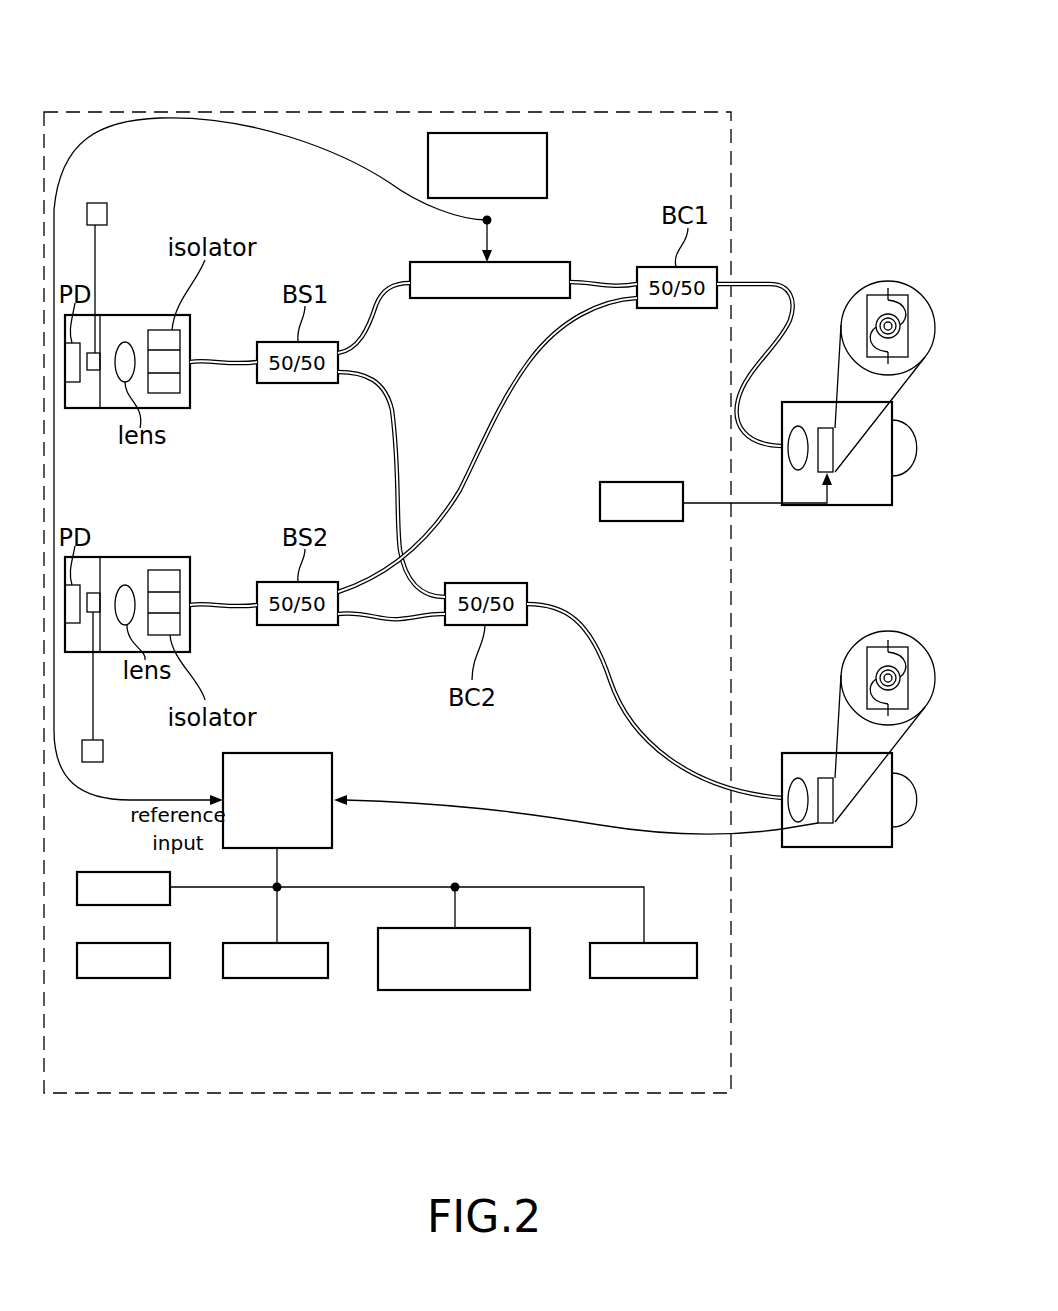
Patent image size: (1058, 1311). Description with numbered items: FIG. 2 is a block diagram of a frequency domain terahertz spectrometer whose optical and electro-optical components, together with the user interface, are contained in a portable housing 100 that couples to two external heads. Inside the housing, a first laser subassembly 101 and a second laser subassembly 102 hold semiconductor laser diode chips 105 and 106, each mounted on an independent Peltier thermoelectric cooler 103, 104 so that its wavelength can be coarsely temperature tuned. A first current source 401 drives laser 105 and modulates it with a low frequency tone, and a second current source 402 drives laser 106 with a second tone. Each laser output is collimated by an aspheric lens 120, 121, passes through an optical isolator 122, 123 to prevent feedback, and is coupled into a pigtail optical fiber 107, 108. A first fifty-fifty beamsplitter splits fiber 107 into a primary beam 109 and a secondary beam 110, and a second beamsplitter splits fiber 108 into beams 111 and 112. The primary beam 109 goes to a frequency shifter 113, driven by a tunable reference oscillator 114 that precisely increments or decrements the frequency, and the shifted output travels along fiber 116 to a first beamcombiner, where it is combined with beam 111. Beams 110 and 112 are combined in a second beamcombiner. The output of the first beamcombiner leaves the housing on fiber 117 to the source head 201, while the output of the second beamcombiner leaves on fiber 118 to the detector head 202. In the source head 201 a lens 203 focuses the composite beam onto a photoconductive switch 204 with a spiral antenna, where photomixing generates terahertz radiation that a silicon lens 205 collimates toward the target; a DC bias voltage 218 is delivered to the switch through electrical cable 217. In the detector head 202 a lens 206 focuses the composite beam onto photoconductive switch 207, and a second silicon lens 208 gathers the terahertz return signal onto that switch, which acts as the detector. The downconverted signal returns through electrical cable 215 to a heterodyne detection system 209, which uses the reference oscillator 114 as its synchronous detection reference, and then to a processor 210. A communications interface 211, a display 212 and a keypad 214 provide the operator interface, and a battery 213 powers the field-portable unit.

The housing 100 is at (383, 112).
The laser subassembly 101 is at (70, 408).
The laser subassembly 102 is at (145, 560).
The Peltier thermoelectric cooler 103 is at (145, 318).
The Peltier thermoelectric cooler 104 is at (192, 643).
The laser 105 is at (95, 408).
The laser 106 is at (93, 593).
The pigtail optical fiber 107 is at (218, 362).
The pigtail optical fiber 108 is at (216, 605).
The primary output beam 109 is at (373, 300).
The secondary beam 110 is at (388, 382).
The output beam 111 is at (478, 437).
The secondary beam 112 is at (390, 620).
The frequency shifter 113 is at (412, 262).
The tunable reference oscillator 114 is at (547, 165).
The fiber 116 is at (598, 280).
The fiber optic cable 117 is at (740, 377).
The fiber optic cable 118 is at (607, 648).
The aspheric lens 120 is at (125, 342).
The aspheric lens 121 is at (117, 622).
The optical isolator 122 is at (170, 393).
The optical isolator 123 is at (168, 575).
The source head 201 is at (805, 505).
The detector head 202 is at (808, 847).
The lens 203 is at (798, 470).
The photoconductive switch 204 is at (818, 428).
The silicon lens 205 is at (905, 478).
The lens 206 is at (798, 778).
The photoconductive switch 207 is at (823, 778).
The silicon lens 208 is at (905, 828).
The heterodyne detection system 209 is at (332, 768).
The processor 210 is at (272, 978).
The communications interface 211 is at (455, 990).
The display 212 is at (643, 978).
The battery 213 is at (122, 978).
The keypad 214 is at (88, 870).
The electrical cable 215 is at (556, 805).
The electrical cable 217 is at (750, 500).
The bias voltage 218 is at (600, 499).
The first current source 401 is at (97, 203).
The second current source 402 is at (103, 750).